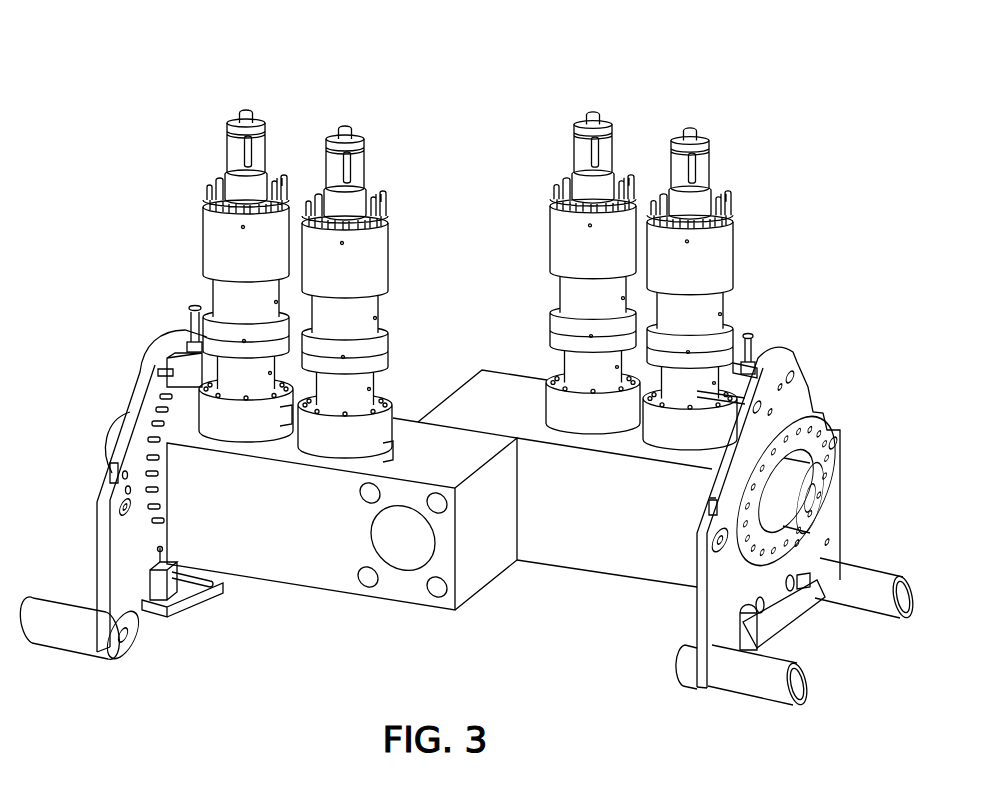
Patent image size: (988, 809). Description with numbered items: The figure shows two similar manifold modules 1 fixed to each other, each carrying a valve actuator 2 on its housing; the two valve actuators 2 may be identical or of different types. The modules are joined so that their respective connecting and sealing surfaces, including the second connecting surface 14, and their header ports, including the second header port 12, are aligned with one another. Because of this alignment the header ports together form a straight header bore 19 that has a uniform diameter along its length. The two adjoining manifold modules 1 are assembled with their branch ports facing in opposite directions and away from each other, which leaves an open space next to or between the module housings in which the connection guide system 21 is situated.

The manifold module 1 is at (298, 555).
The valve actuator 2 is at (690, 112).
The second header port 12 is at (406, 547).
The second connecting surface 14 is at (443, 543).
The straight header bore 19 is at (790, 453).
The connection guide system 21 is at (797, 613).